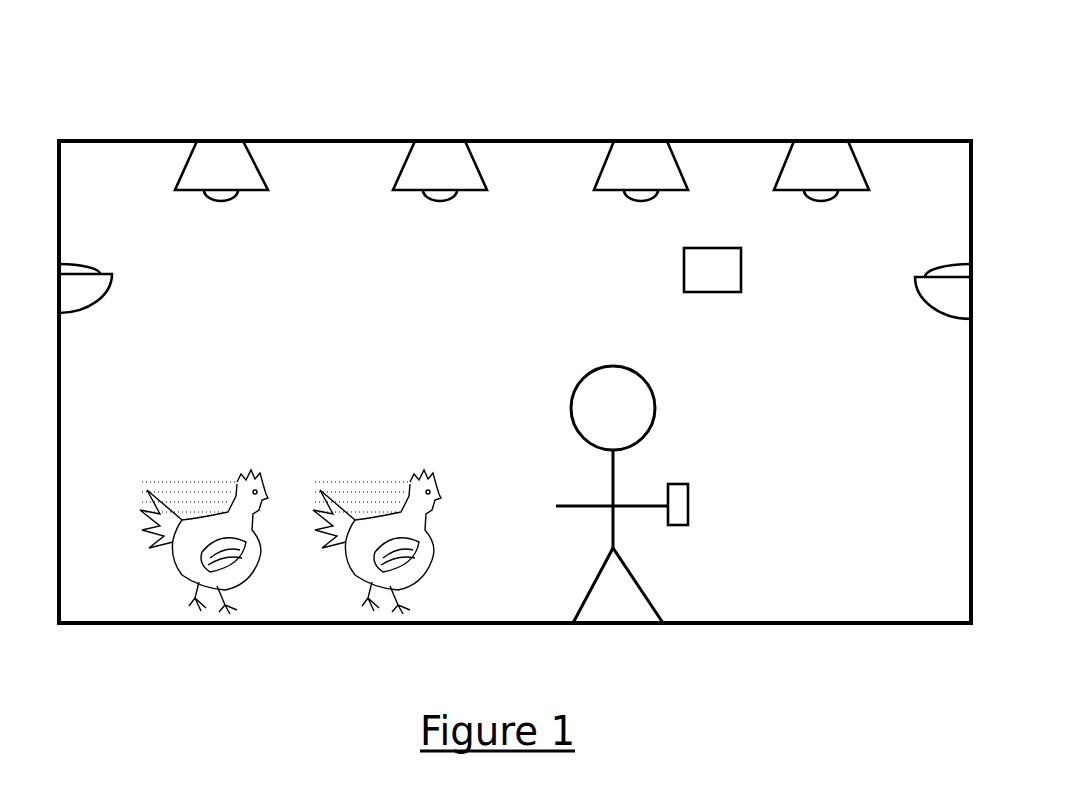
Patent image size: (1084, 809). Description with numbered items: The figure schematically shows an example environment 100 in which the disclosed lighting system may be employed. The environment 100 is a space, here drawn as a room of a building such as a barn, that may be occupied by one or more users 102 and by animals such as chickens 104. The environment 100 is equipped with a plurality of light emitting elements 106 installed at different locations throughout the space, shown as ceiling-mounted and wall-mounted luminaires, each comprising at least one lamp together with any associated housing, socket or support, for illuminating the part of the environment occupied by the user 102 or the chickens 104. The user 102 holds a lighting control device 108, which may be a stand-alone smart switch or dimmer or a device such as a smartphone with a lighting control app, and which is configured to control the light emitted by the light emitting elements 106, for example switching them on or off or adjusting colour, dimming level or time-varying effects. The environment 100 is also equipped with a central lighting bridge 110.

The environment 100 is at (678, 96).
The user 102 is at (577, 385).
The chickens 104 is at (252, 477).
The light emitting elements 106 is at (232, 198).
The lighting control device 108 is at (688, 500).
The central lighting bridge 110 is at (741, 255).